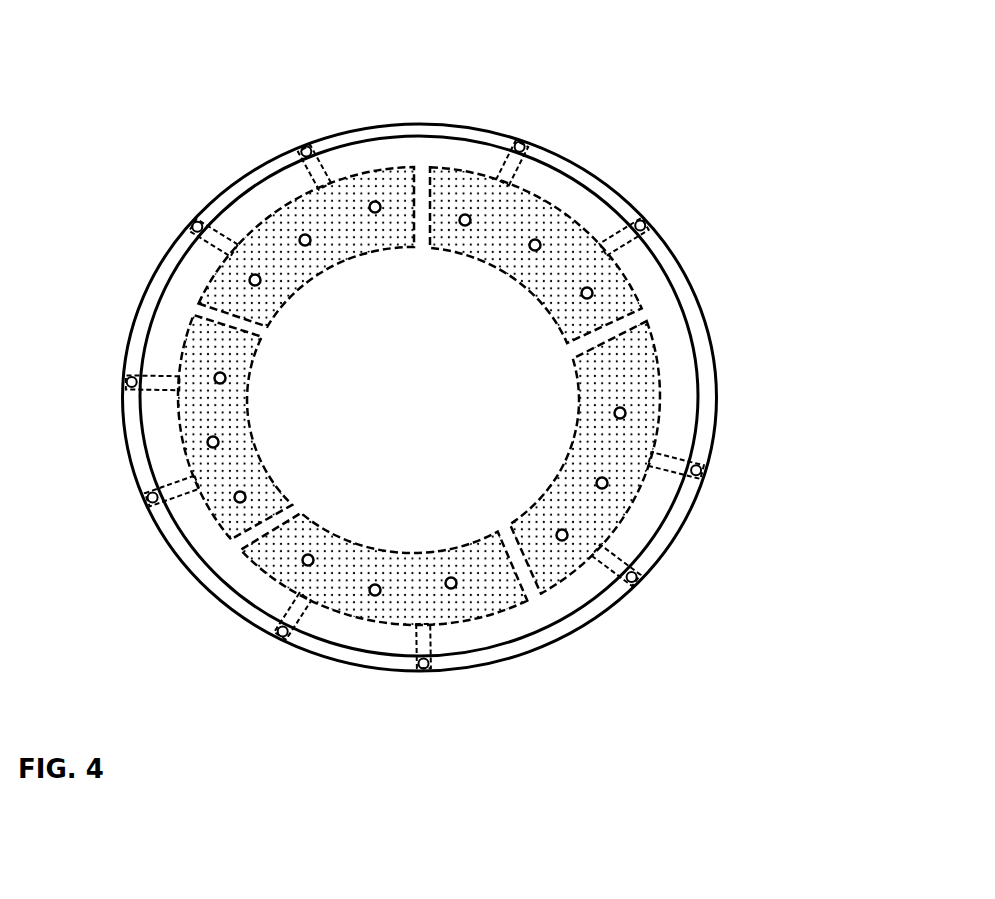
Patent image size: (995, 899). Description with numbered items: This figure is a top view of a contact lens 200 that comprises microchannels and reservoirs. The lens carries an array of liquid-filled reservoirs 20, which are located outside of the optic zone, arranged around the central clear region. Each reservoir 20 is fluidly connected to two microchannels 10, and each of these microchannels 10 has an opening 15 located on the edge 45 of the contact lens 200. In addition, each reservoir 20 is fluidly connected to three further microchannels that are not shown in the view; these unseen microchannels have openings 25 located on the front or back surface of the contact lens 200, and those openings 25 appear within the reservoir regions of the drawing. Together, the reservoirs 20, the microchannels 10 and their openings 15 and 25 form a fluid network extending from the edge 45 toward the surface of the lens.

The contact lens 200 is at (208, 143).
The microchannel 10 is at (612, 237).
The opening 15 is at (642, 223).
The liquid-filled reservoir 20 is at (633, 443).
The opening 25 is at (607, 486).
The edge 45 is at (706, 352).